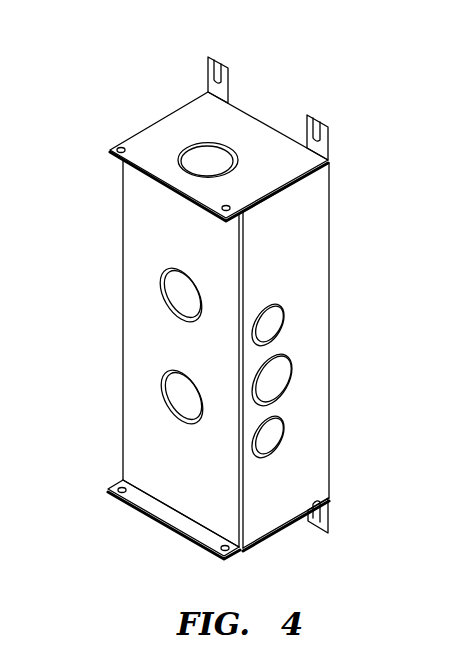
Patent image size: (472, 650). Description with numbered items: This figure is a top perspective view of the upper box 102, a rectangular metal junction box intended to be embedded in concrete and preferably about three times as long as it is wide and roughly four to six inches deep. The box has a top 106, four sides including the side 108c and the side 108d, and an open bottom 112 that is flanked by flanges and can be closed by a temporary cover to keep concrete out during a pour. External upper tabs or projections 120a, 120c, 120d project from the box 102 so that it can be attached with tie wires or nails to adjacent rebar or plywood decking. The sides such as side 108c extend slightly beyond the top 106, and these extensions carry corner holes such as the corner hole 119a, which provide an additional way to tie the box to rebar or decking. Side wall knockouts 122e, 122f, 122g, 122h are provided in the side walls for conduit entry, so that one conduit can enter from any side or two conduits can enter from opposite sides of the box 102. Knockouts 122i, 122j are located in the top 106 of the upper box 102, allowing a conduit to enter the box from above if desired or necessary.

The upper box 102 is at (280, 71).
The top 106 is at (190, 478).
The side 108c is at (285, 165).
The side 108d is at (297, 236).
The open bottom 112 is at (265, 118).
The corner hole 119a is at (110, 142).
The external upper tab 120a is at (325, 523).
The external upper tab 120c is at (210, 67).
The external upper tab 120d is at (328, 125).
The side wall knockout 122e is at (200, 155).
The side wall knockout 122f is at (267, 440).
The side wall knockout 122g is at (273, 378).
The side wall knockout 122h is at (268, 324).
The knockout 122i is at (170, 292).
The knockout 122j is at (172, 400).